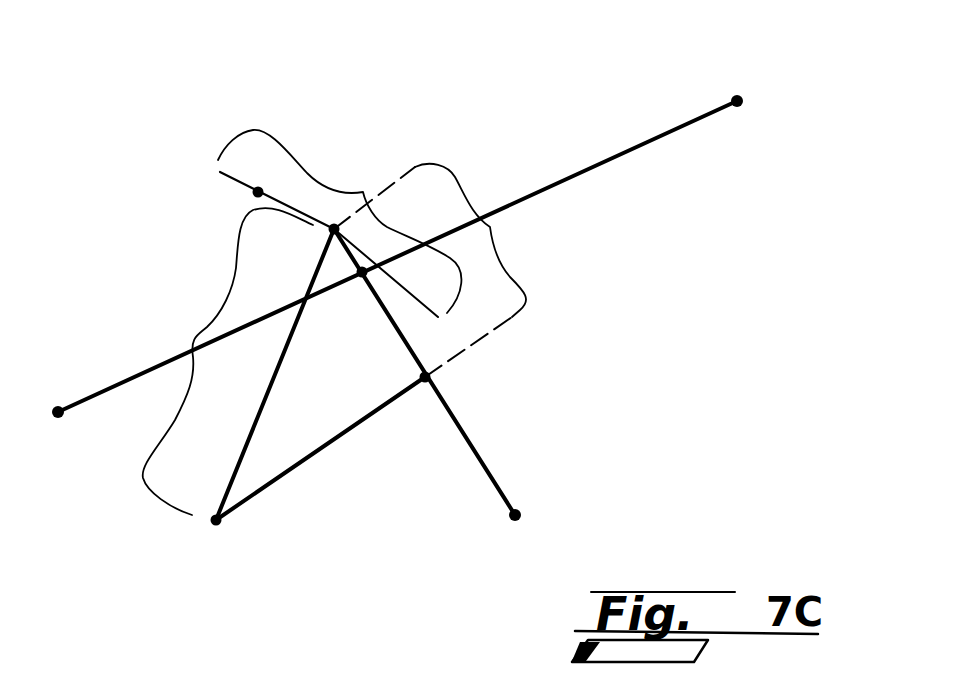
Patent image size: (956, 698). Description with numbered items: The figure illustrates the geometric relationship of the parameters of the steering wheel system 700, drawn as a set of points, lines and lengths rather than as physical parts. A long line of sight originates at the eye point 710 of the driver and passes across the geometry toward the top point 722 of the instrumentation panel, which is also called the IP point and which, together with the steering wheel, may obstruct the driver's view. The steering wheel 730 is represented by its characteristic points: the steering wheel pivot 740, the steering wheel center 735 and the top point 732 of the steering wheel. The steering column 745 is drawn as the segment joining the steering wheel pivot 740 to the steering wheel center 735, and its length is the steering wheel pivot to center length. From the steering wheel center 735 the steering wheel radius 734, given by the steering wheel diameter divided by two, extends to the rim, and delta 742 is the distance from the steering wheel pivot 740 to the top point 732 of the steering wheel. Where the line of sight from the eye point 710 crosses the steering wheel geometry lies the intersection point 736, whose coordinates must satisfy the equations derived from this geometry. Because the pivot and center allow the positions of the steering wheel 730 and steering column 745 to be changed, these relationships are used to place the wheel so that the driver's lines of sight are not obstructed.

The steering wheel system 700 is at (113, 199).
The eye point 710 is at (737, 92).
The top point of instrumentation panel 722 is at (60, 413).
The steering wheel 730 is at (482, 457).
The top point of steering wheel 732 is at (363, 192).
The steering wheel radius 734 is at (490, 227).
The steering wheel center 735 is at (436, 380).
The intersection point 736 is at (360, 268).
The steering wheel pivot 740 is at (220, 524).
The delta 742 is at (190, 337).
The steering column 745 is at (308, 455).